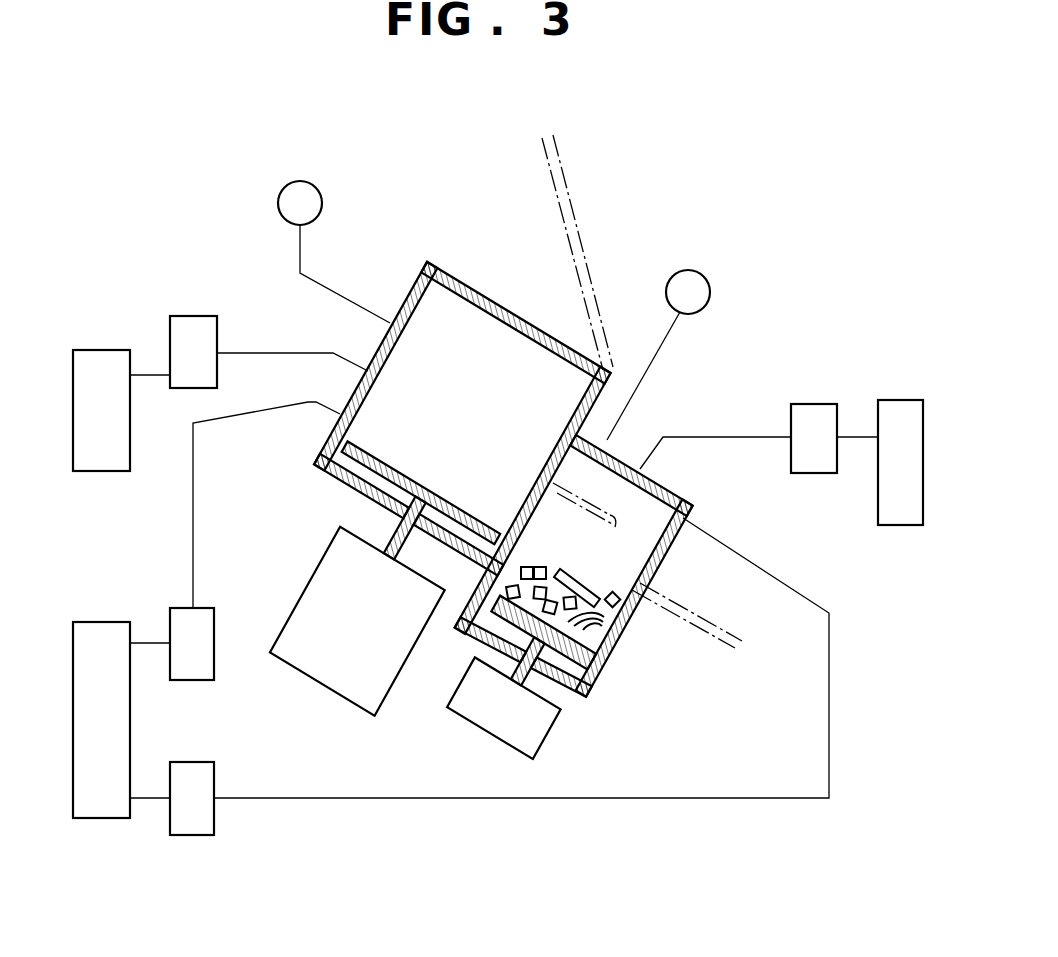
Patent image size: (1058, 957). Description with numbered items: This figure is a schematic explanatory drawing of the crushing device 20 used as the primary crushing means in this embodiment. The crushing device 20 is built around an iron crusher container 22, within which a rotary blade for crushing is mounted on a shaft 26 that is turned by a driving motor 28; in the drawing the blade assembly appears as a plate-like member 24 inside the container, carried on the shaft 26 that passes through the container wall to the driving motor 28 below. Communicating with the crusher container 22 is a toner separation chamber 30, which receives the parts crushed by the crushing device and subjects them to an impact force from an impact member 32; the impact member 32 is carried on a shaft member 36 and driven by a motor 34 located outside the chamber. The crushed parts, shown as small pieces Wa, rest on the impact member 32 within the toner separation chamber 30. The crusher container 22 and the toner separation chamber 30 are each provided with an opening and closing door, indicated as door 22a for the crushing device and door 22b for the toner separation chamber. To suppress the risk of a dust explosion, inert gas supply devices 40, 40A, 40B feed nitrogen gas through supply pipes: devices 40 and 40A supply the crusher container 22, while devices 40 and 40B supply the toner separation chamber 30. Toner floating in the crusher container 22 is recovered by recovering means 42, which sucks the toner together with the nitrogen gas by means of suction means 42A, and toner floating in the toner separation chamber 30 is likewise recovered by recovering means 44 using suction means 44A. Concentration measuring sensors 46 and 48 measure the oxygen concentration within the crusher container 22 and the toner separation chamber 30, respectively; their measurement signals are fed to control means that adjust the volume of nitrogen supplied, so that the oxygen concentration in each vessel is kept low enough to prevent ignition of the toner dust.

The crushing device 20 is at (478, 174).
The crusher container 22 is at (463, 282).
The opening and closing door 22a is at (656, 488).
The opening and closing door 22b is at (742, 644).
The upper electrode 24 is at (352, 455).
The shaft 26 is at (413, 538).
The driving motor 28 is at (328, 682).
The toner separation chamber 30 is at (650, 550).
The impact member 32 is at (615, 625).
The motor 34 is at (490, 741).
The shaft member 36 is at (555, 690).
The inert gas supply device 40 is at (103, 621).
The inert gas supply device 40A is at (193, 680).
The inert gas supply device 40B is at (193, 835).
The toner recovering means 42 is at (103, 350).
The suction means 42A is at (192, 316).
The toner recovering means 44 is at (903, 400).
The suction means 44A is at (814, 404).
The concentration measuring sensor 46 is at (278, 203).
The concentration measuring sensor 48 is at (689, 270).
The workpieces Wa is at (578, 590).